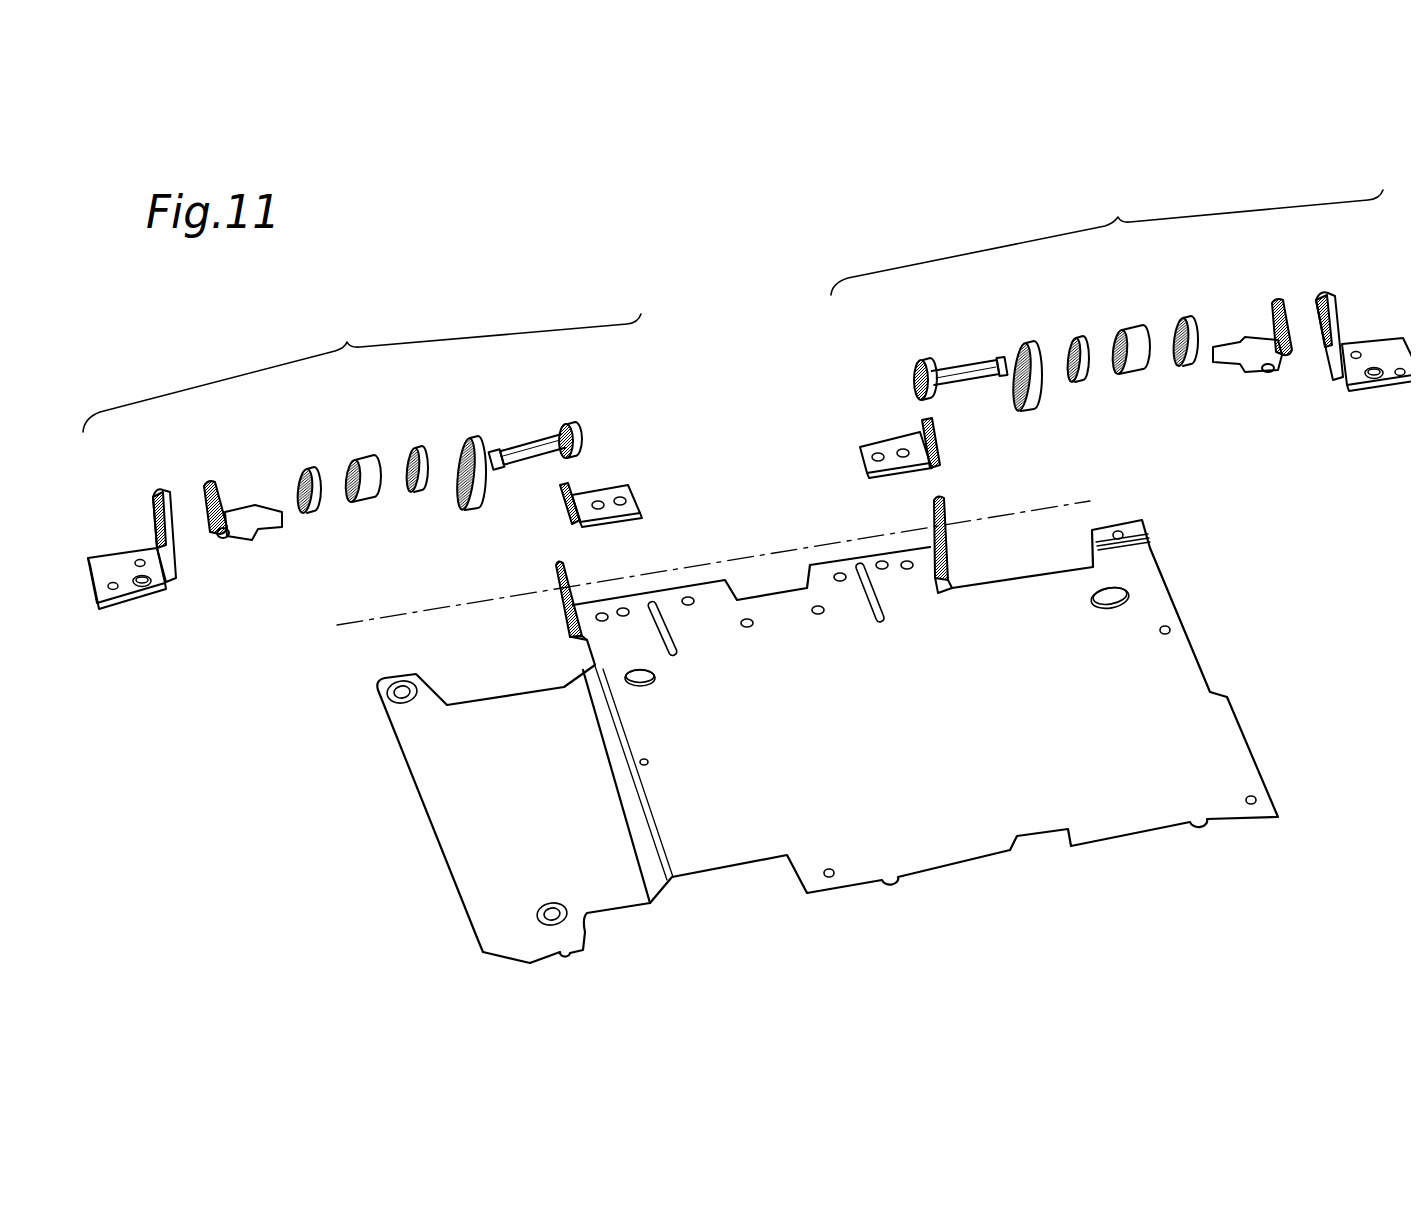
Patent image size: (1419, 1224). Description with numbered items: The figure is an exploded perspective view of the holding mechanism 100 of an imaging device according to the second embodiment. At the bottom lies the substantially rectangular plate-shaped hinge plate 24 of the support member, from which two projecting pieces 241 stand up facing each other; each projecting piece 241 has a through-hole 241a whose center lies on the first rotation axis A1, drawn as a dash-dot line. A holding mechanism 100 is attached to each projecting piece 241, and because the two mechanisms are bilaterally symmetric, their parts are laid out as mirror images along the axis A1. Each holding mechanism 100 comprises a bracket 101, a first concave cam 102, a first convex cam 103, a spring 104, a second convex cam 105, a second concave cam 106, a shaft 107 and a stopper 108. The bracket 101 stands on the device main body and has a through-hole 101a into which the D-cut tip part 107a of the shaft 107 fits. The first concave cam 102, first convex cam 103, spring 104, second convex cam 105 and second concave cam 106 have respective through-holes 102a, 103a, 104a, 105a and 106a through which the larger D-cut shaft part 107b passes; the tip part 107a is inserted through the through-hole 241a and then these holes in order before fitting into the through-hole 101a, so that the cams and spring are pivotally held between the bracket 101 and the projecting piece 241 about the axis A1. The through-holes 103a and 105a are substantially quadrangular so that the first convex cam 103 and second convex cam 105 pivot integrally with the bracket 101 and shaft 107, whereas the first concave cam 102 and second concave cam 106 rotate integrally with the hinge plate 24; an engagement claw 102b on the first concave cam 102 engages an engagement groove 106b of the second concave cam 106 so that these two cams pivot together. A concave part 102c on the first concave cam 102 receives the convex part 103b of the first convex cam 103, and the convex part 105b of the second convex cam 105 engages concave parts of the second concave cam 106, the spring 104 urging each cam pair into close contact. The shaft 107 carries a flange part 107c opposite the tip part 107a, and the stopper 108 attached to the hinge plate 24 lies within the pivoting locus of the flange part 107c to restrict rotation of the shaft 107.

The hinge plate 24 is at (1165, 682).
The projecting piece 241 is at (571, 566).
The through-hole 241a is at (562, 596).
The first rotation axis A1 is at (356, 627).
The holding mechanism 100 is at (747, 419).
The bracket 101 is at (749, 454).
The through-hole 101a is at (153, 502).
The first concave cam 102 is at (753, 424).
The through-hole 102a is at (204, 492).
The engagement claw 102b is at (240, 512).
The concave part 102c is at (218, 536).
The first convex cam 103 is at (755, 424).
The through-hole 103a is at (300, 472).
The convex part 103b is at (320, 505).
The spring 104 is at (734, 413).
The through-hole 104a is at (348, 470).
The second convex cam 105 is at (754, 417).
The through-hole 105a is at (410, 453).
The convex part 105b is at (424, 490).
The second concave cam 106 is at (751, 435).
The through-hole 106a is at (462, 448).
The engagement groove 106b is at (1048, 447).
The shaft 107 is at (739, 390).
The tip part 107a is at (493, 450).
The shaft part 107b is at (530, 440).
The flange part 107c is at (578, 440).
The stopper 108 is at (612, 497).